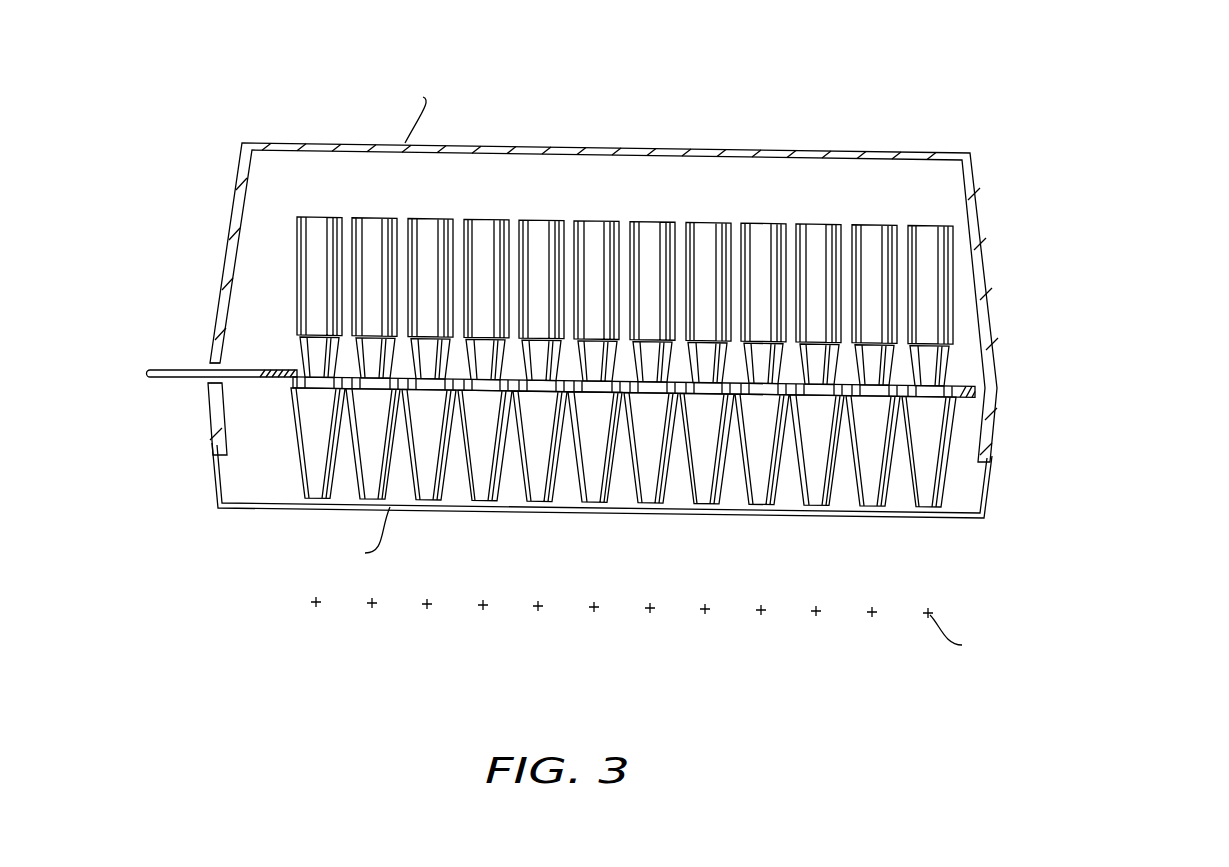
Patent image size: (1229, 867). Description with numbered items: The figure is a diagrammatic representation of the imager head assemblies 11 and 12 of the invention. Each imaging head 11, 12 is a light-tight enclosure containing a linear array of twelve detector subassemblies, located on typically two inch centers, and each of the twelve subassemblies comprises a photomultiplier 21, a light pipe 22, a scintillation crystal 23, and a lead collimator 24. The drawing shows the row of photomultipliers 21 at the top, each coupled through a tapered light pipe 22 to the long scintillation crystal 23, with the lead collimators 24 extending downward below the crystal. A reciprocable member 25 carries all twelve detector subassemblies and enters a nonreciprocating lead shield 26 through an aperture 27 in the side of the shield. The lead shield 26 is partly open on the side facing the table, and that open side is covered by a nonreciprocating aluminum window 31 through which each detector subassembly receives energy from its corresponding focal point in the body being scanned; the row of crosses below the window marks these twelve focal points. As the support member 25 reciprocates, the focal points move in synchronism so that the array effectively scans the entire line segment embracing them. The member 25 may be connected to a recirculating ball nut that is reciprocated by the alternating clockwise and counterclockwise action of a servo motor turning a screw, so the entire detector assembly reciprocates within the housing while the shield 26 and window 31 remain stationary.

The head assembly 11 is at (697, 130).
The head assembly 12 is at (665, 361).
The photomultiplier 21 is at (1018, 290).
The light pipe 22 is at (1008, 337).
The scintillation crystal 23 is at (1015, 381).
The lead collimator 24 is at (1018, 478).
The reciprocable member 25 is at (175, 380).
The nonreciprocating lead shield 26 is at (232, 210).
The aperture 27 is at (212, 368).
The nonreciprocating aluminum window 31 is at (810, 517).